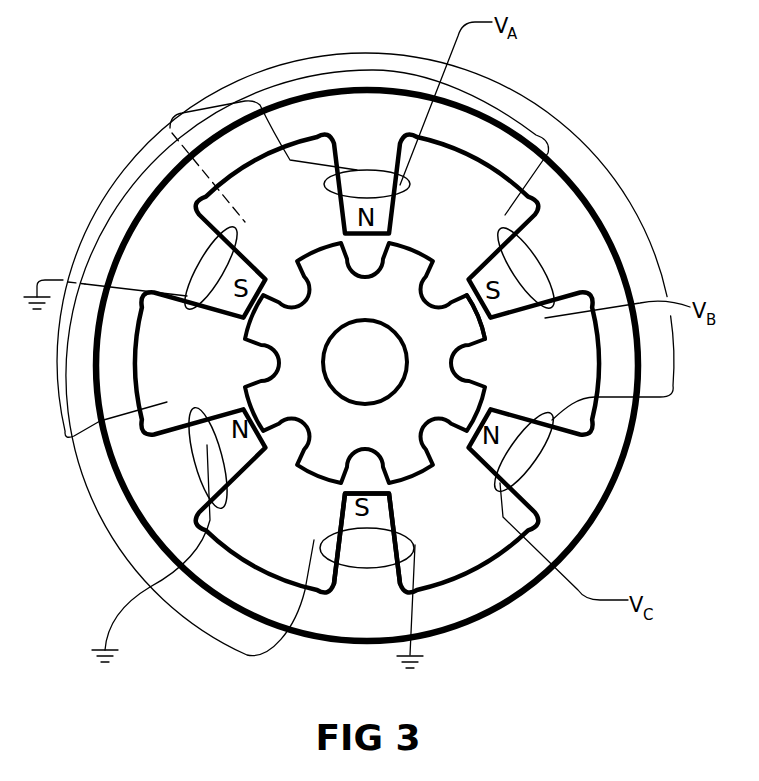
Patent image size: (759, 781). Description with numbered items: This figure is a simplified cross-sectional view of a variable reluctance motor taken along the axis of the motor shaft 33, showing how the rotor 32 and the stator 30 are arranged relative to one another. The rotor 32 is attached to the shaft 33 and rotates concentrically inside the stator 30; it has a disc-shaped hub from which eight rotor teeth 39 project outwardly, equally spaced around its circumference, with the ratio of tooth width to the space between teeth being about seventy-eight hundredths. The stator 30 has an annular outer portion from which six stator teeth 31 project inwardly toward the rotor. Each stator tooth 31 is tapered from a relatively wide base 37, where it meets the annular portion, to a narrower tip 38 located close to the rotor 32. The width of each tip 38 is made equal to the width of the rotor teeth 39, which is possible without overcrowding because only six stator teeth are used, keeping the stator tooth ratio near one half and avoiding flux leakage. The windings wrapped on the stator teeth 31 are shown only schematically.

The stator 30 is at (612, 430).
The stator teeth 31 is at (337, 520).
The rotor 32 is at (318, 447).
The shaft 33 is at (352, 377).
The base 37 is at (385, 619).
The tip 38 is at (372, 506).
The rotor teeth 39 is at (462, 334).